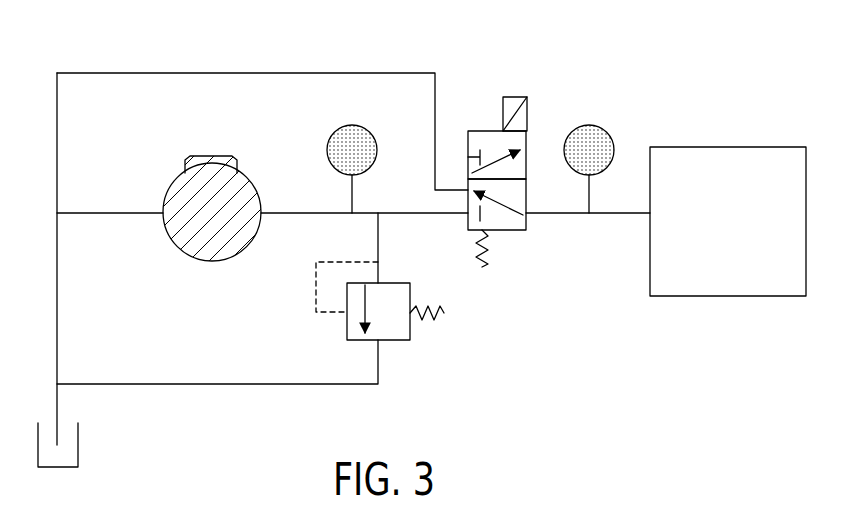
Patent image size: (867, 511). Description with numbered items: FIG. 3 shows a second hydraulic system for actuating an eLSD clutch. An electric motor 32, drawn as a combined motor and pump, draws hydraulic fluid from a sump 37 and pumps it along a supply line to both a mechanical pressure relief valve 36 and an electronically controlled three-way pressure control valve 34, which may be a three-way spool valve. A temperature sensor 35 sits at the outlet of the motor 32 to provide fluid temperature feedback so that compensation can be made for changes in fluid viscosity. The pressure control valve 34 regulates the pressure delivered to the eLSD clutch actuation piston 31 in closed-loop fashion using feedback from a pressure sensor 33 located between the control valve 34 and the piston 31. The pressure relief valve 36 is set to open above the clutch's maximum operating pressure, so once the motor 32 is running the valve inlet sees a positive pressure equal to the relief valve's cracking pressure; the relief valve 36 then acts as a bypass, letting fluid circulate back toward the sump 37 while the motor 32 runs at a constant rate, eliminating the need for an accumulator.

The eLSD clutch actuation piston 31 is at (703, 296).
The electric motor 32 is at (210, 262).
The pressure sensor 33 is at (613, 143).
The 3-way pressure control valve 34 is at (503, 122).
The temperature sensor 35 is at (328, 160).
The mechanical pressure relief valve 36 is at (412, 330).
The sump 37 is at (78, 447).